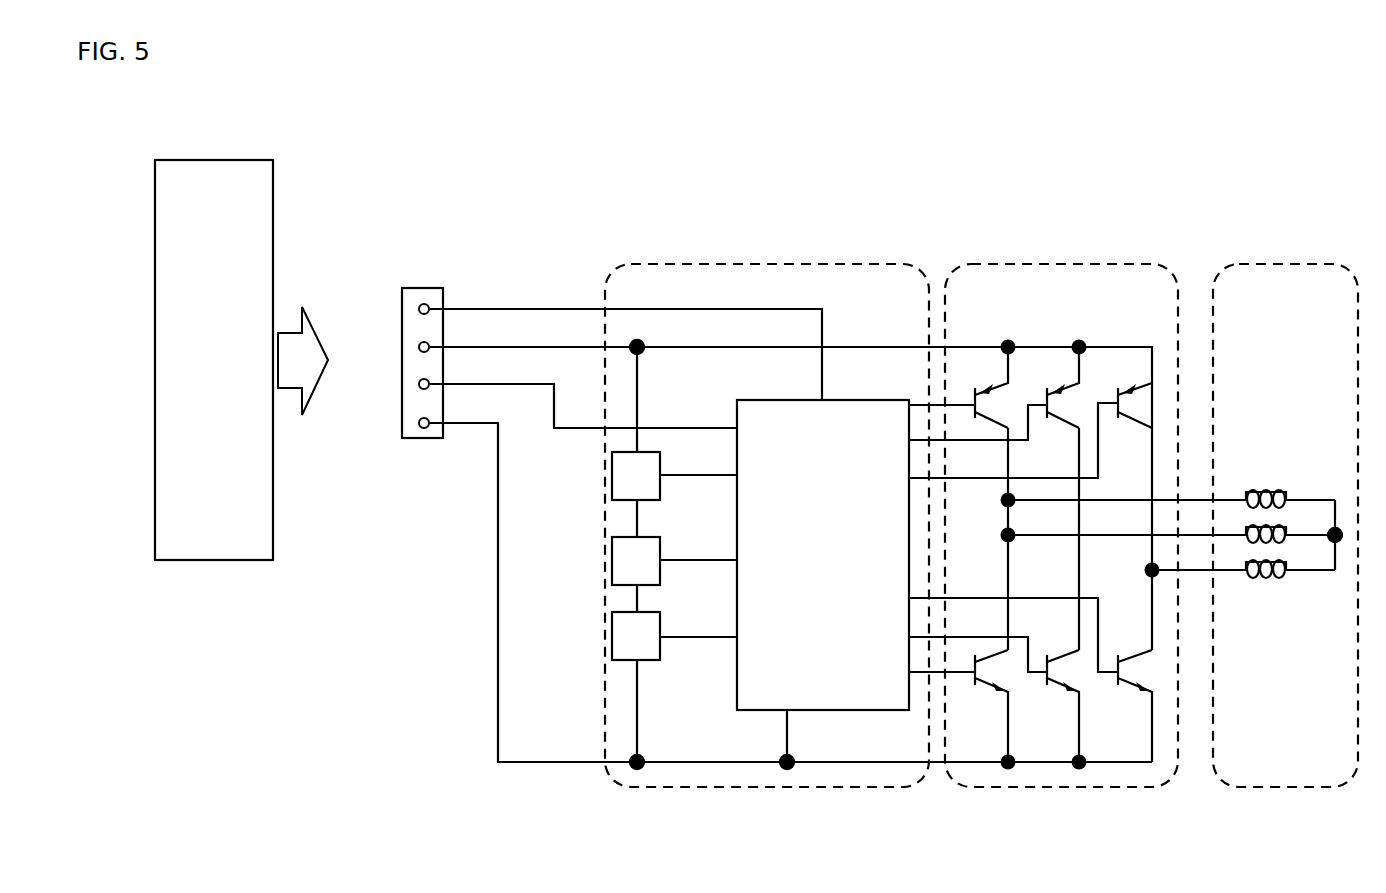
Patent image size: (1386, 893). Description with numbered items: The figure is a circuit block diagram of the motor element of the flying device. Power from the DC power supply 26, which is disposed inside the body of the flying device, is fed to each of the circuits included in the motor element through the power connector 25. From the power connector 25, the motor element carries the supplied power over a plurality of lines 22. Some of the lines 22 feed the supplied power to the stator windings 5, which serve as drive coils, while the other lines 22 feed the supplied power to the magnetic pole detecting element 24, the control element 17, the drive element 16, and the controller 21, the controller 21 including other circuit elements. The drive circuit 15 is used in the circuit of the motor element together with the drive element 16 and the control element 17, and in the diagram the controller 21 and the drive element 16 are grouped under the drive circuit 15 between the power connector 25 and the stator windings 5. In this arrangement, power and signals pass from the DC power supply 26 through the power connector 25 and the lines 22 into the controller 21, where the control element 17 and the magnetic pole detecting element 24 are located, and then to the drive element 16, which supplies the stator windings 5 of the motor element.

The DC power supply 26 is at (222, 160).
The power connector 25 is at (425, 288).
The lines 22 is at (573, 347).
The drive circuit 15 is at (1100, 180).
The controller 21 is at (765, 264).
The drive element 16 is at (1033, 264).
The stator windings 5 is at (1283, 264).
The magnetic pole detecting element 24 is at (612, 478).
The control element 17 is at (757, 710).